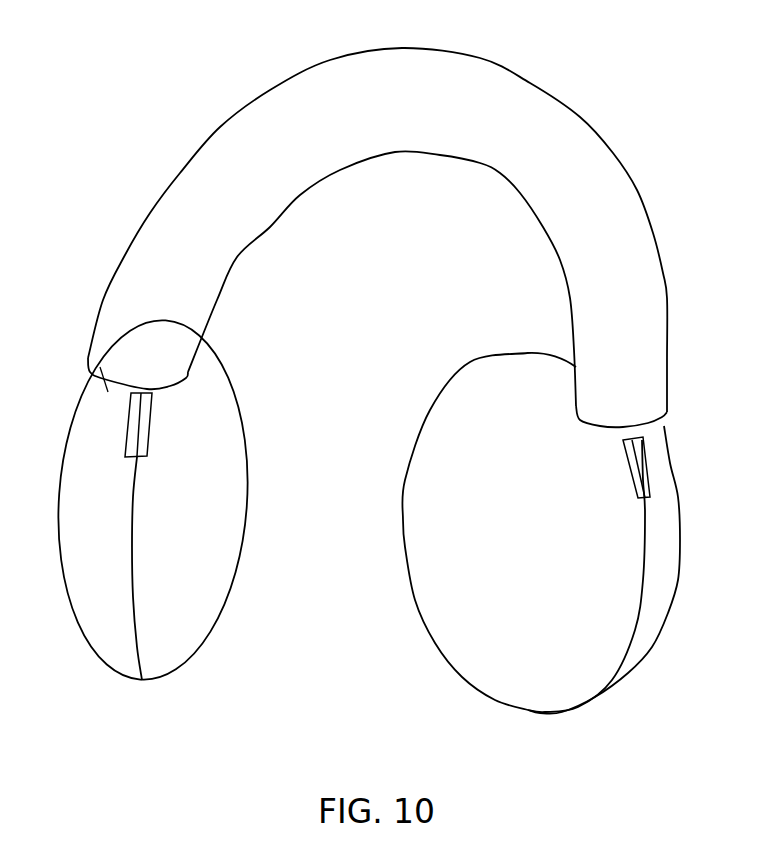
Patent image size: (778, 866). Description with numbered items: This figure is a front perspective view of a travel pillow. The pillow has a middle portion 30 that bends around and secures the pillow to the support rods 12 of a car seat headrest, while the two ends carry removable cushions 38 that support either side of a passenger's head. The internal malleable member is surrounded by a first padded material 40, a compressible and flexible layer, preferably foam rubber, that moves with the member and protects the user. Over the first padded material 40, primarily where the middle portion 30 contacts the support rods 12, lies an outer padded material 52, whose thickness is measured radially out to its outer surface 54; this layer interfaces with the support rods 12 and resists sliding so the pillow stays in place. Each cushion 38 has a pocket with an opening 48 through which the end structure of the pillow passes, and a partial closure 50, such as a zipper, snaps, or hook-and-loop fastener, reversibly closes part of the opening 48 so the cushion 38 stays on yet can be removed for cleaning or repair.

The support rods 12 is at (335, 20).
The middle portion 30 is at (400, 217).
The removable cushions 38 is at (110, 648).
The first padded material 40 is at (663, 424).
The opening 48 is at (178, 388).
The partial closure 50 is at (131, 423).
The outer padded material 52 is at (528, 94).
The outer surface 54 is at (620, 163).